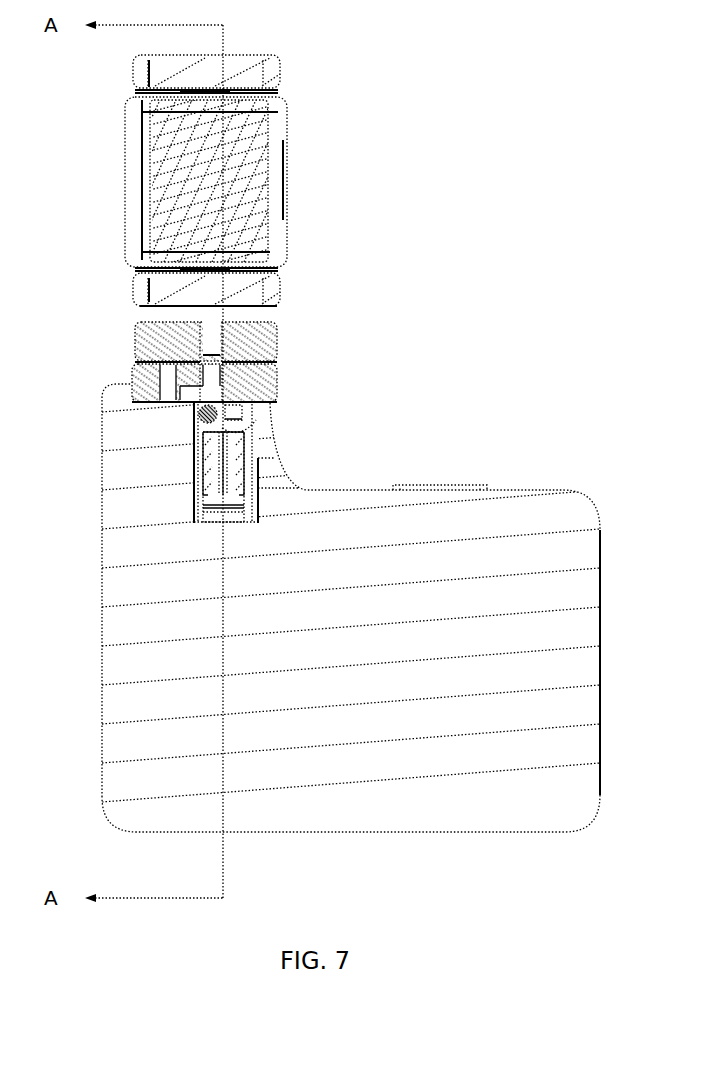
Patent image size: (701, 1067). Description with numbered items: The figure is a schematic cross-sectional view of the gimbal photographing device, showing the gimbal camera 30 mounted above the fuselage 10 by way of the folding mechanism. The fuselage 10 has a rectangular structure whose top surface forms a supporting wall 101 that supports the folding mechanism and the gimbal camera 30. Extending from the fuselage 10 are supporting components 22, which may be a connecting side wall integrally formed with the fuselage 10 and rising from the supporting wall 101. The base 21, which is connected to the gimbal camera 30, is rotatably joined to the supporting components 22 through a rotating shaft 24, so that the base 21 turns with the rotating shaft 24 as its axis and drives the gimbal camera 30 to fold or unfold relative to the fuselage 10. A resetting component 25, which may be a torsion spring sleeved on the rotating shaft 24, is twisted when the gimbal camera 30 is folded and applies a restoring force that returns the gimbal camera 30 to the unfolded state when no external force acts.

The gimbal camera 30 is at (282, 186).
The base 21 is at (278, 332).
The rotating shaft 24 is at (278, 391).
The resetting component 25 is at (250, 428).
The supporting components 22 is at (130, 440).
The supporting wall 101 is at (376, 490).
The fuselage 10 is at (518, 527).